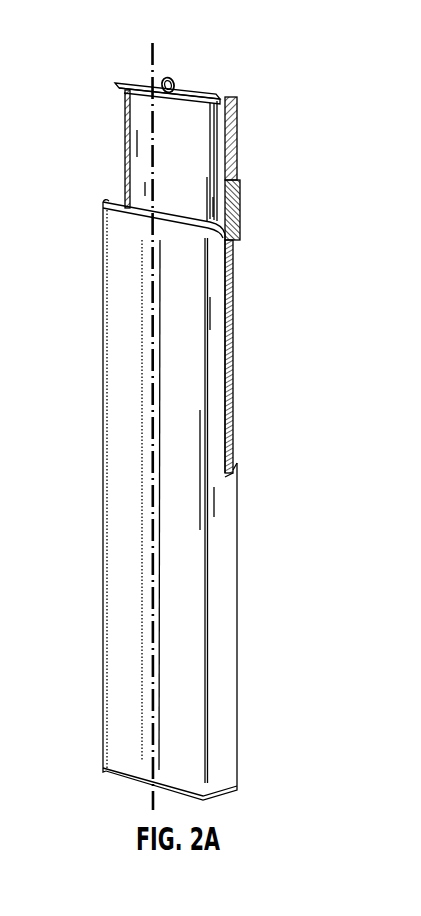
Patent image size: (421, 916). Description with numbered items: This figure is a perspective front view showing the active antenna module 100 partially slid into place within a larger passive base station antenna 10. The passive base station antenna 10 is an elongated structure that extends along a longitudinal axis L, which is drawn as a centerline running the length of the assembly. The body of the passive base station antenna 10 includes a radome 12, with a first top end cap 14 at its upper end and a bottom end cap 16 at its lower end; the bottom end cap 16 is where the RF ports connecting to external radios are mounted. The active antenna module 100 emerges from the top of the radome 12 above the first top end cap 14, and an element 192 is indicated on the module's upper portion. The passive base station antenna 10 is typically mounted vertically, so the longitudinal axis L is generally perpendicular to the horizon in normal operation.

The longitudinal axis L is at (150, 62).
The active antenna module 100 is at (283, 182).
The inner column 192 is at (142, 154).
The first top end cap 14 is at (117, 202).
The radome 12 is at (109, 400).
The bottom end cap 16 is at (103, 770).
The passive base station antenna 10 is at (262, 471).